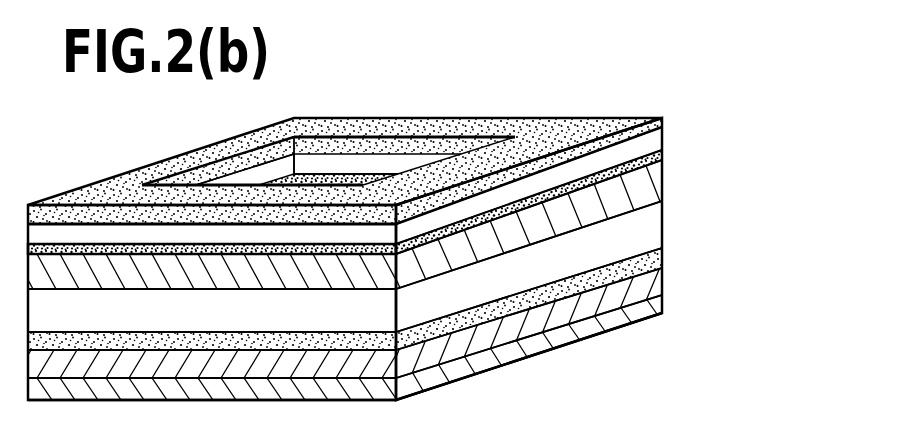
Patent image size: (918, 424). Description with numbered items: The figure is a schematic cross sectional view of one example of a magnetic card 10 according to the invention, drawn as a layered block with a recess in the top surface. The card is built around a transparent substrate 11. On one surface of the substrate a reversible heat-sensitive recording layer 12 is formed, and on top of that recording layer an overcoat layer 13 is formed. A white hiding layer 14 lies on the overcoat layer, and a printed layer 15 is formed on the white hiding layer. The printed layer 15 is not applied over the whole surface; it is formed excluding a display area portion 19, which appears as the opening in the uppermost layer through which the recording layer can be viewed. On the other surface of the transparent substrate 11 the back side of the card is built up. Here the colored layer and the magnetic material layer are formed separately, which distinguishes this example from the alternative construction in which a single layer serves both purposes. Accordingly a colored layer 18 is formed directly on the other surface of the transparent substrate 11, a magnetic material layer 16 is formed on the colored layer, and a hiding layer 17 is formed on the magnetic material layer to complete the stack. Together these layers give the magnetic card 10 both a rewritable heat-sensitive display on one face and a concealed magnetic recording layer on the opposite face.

The magnetic card 10 is at (543, 88).
The display area portion 19 is at (606, 119).
The printed layer 15 is at (662, 127).
The white hiding layer 14 is at (662, 146).
The overcoat layer 13 is at (662, 160).
The reversible heat-sensitive recording layer 12 is at (662, 182).
The transparent substrate 11 is at (662, 227).
The colored layer 18 is at (662, 257).
The magnetic material layer 16 is at (662, 282).
The hiding layer 17 is at (662, 307).